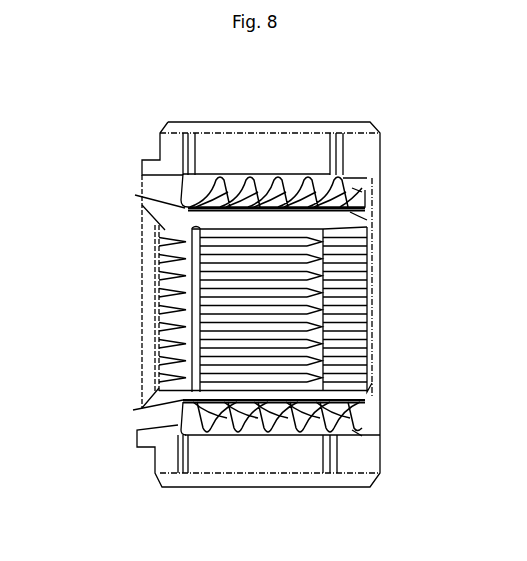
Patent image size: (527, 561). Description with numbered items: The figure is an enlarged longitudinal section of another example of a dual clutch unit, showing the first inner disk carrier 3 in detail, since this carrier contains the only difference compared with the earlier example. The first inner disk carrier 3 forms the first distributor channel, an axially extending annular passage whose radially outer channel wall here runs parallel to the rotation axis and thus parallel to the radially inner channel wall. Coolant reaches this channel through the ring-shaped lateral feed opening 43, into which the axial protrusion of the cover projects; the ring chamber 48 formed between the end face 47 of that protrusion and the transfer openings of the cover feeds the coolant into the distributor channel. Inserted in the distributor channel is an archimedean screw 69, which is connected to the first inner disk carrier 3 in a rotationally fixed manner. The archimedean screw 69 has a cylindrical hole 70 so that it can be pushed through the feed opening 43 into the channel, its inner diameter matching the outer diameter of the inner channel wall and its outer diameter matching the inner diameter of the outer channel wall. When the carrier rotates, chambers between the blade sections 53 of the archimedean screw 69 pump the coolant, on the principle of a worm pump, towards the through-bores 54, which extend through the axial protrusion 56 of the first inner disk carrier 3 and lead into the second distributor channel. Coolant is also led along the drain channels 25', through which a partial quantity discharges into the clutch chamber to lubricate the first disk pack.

The first inner disk carrier 3 is at (150, 473).
The drain channels 25' is at (282, 222).
The flow guide blade 53 is at (198, 175).
The archimedean screw 69 is at (360, 188).
The cylindrical hole 70 is at (352, 219).
The through-bores 54 is at (135, 195).
The axial protrusion 56 is at (137, 447).
The feed opening 43 is at (378, 410).
The ring chamber 48 is at (357, 434).
The end face 47 is at (375, 435).